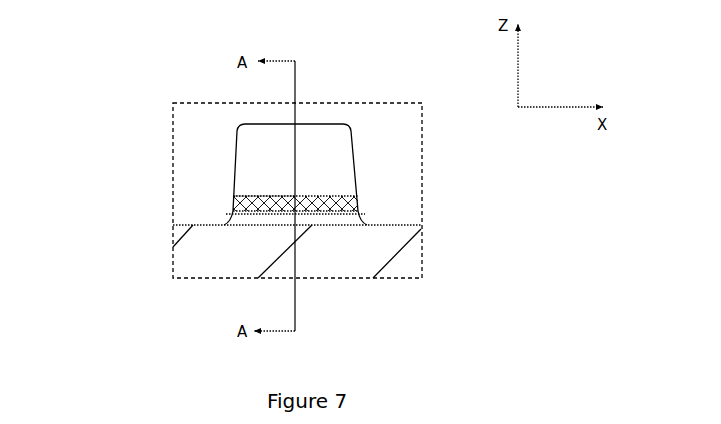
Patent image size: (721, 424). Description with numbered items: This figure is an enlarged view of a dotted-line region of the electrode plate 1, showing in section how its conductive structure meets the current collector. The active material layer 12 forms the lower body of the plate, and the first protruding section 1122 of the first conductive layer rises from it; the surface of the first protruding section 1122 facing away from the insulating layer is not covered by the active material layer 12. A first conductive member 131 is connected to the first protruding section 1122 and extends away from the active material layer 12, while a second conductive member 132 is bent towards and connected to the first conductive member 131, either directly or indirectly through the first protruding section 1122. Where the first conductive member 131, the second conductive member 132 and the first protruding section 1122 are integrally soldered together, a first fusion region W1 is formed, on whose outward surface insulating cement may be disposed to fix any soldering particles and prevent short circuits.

The electrode plate 1 is at (110, 120).
The active material layer 12 is at (352, 257).
The first conductive member 131 is at (340, 169).
The second conductive member 132 is at (362, 215).
The first protruding section 1122 is at (231, 221).
The first fusion region W1 is at (262, 197).